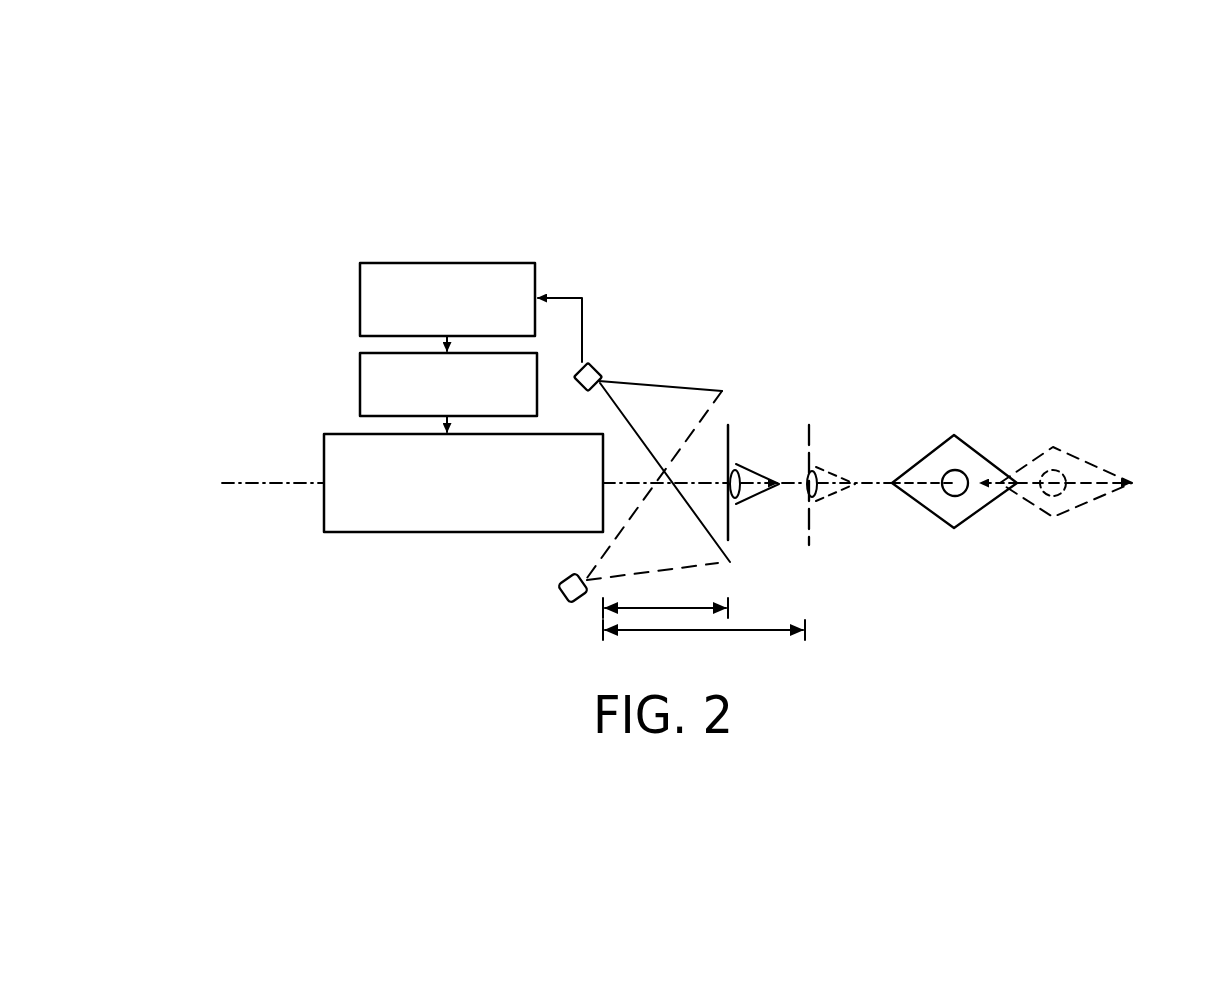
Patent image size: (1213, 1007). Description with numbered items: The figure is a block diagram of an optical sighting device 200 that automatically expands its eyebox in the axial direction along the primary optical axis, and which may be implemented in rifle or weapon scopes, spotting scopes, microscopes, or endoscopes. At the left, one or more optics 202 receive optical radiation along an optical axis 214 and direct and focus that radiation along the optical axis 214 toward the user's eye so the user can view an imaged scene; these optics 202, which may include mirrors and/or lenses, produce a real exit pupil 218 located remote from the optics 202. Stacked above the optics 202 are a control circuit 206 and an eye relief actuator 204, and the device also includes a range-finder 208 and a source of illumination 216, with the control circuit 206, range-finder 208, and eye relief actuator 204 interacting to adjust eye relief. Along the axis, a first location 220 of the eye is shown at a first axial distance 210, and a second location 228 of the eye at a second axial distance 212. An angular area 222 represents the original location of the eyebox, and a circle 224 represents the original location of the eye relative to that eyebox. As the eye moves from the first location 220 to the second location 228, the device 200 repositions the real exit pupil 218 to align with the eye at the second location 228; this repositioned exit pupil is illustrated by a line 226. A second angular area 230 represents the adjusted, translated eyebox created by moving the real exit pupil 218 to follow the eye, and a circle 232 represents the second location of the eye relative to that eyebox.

The optical sighting device 200 is at (749, 252).
The optics 202 is at (497, 508).
The eye relief actuator 204 is at (360, 373).
The control circuit 206 is at (412, 262).
The range-finder 208 is at (600, 366).
The first axial distance 210 is at (652, 606).
The second axial distance 212 is at (645, 633).
The optical axis 214 is at (227, 490).
The source of illumination 216 is at (563, 601).
The real exit pupil 218 is at (728, 525).
The first location of the eye 220 is at (738, 466).
The angular area 222 is at (963, 441).
The circle 224 is at (958, 496).
The line 226 is at (808, 540).
The second location of the eye 228 is at (817, 467).
The angular area 230 is at (1090, 462).
The circle 232 is at (1063, 496).